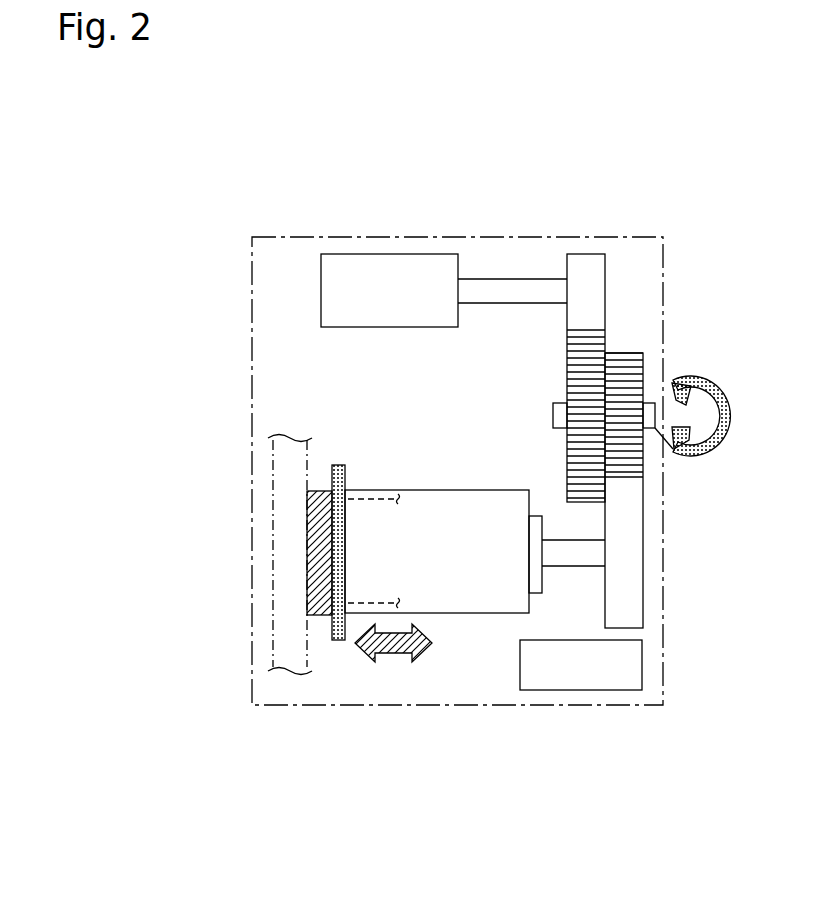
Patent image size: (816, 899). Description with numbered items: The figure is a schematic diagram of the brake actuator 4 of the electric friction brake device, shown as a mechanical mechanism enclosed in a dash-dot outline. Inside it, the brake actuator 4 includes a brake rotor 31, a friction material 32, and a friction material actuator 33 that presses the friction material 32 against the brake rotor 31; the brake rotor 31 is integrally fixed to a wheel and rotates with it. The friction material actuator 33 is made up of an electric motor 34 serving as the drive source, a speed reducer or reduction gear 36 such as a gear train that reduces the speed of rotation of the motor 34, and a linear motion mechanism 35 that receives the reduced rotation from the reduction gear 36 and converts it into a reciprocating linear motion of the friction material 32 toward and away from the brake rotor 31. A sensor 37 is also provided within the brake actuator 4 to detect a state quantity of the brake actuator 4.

The brake actuator 4 is at (250, 302).
The brake rotor 31 is at (287, 460).
The friction material 32 is at (320, 613).
The friction material actuator 33 is at (302, 170).
The electric motor 34 is at (388, 260).
The linear motion mechanism 35 is at (377, 498).
The reduction gear 36 is at (624, 331).
The sensor 37 is at (583, 690).